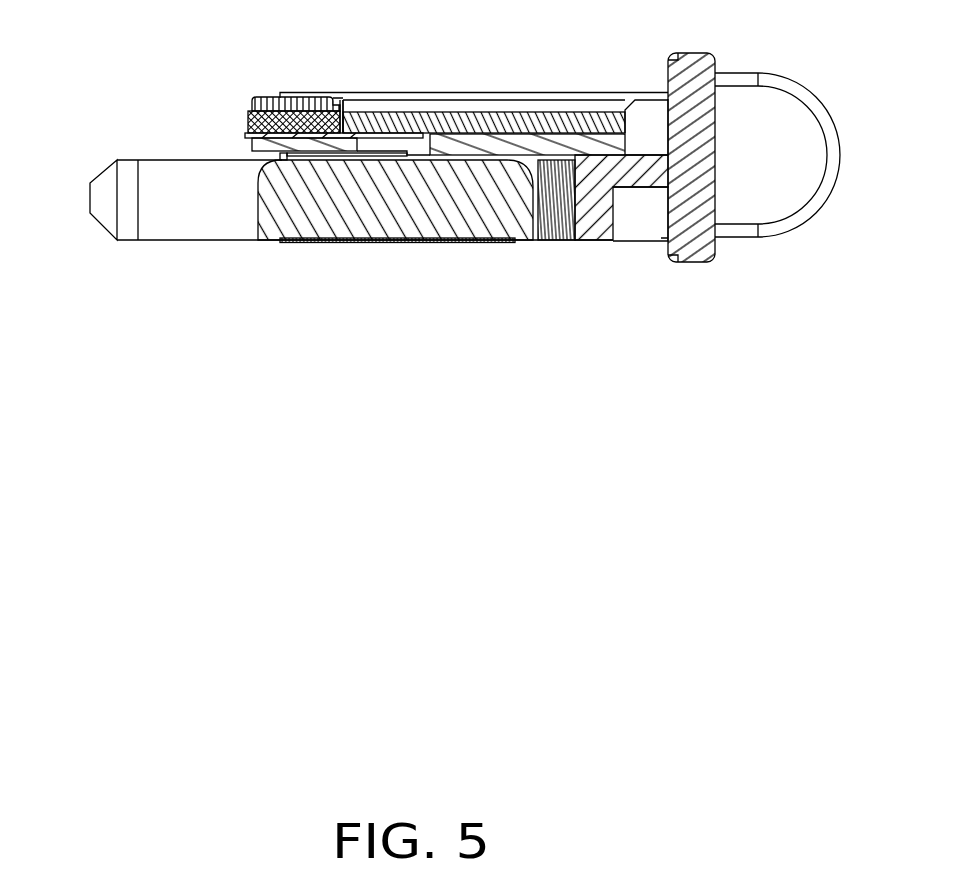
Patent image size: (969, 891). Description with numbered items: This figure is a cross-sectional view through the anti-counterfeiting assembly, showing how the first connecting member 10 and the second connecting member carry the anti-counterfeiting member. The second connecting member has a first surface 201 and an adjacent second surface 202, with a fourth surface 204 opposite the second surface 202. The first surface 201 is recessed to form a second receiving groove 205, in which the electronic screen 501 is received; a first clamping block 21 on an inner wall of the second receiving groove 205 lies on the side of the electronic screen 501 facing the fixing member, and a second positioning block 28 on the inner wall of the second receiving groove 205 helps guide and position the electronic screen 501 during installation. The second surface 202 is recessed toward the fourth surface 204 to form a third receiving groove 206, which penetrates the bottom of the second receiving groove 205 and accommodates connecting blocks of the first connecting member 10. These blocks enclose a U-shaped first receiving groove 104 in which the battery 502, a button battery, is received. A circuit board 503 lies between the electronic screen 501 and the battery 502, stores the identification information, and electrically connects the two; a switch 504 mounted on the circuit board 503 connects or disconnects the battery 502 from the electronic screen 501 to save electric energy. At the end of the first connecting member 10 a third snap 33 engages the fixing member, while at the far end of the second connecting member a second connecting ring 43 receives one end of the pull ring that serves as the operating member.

The first connecting member 10 is at (553, 222).
The first clamping block 21 is at (342, 112).
The second positioning block 28 is at (650, 108).
The third snap 33 is at (105, 187).
The second connecting ring 43 is at (762, 98).
The first receiving groove 104 is at (533, 225).
The first surface 201 is at (513, 107).
The second surface 202 is at (282, 97).
The fourth surface 204 is at (698, 173).
The second receiving groove 205 is at (660, 138).
The third receiving groove 206 is at (577, 217).
The electronic screen 501 is at (585, 130).
The battery 502 is at (337, 225).
The circuit board 503 is at (258, 125).
The switch 504 is at (283, 122).